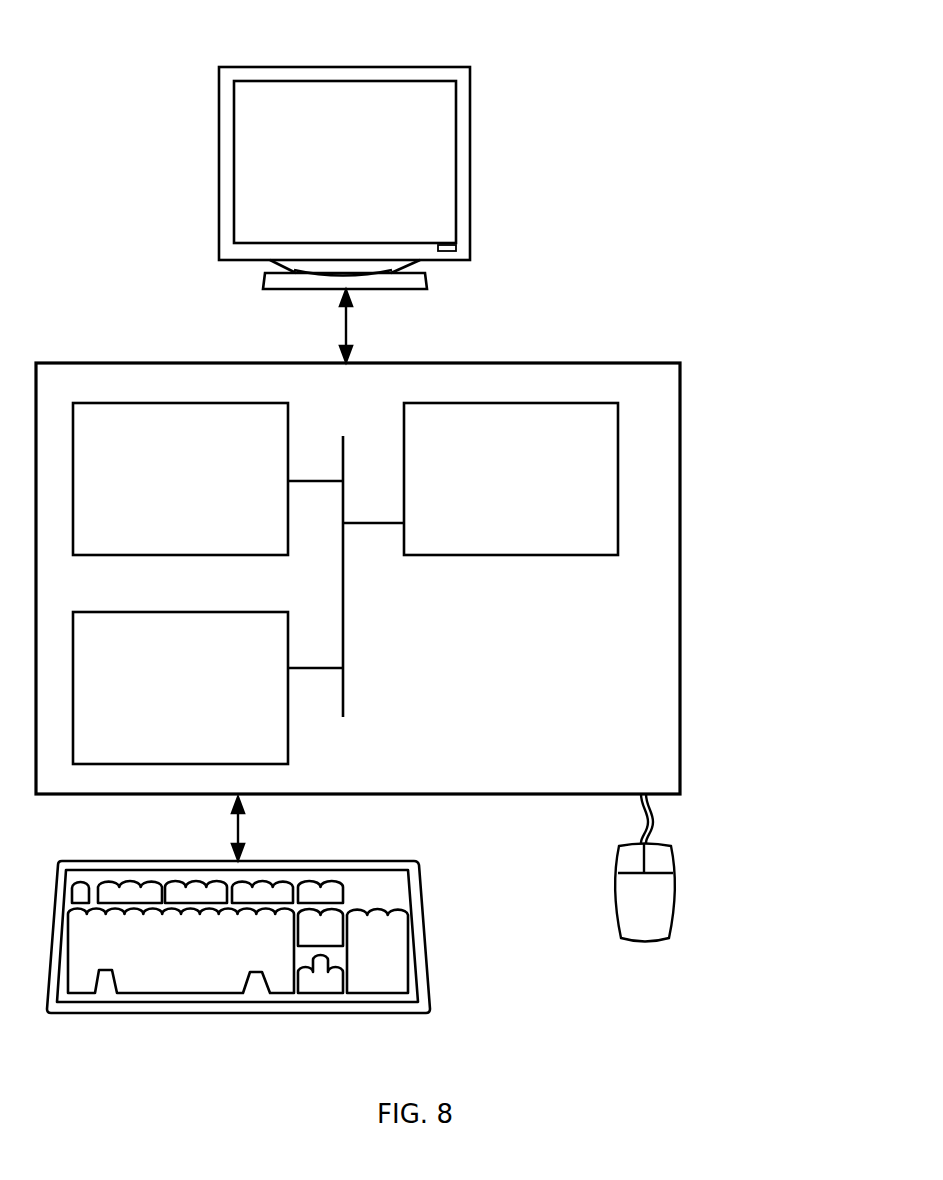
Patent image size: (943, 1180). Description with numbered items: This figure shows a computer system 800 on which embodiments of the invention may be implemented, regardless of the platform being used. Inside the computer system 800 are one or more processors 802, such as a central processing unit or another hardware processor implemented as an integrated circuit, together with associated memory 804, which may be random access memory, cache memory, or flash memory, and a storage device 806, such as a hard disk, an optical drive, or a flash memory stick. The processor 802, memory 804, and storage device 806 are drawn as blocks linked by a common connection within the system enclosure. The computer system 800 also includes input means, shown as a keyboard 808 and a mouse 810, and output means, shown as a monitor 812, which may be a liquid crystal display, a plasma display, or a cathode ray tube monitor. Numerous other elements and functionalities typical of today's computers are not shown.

The computer system 800 is at (735, 370).
The processor 802 is at (491, 478).
The memory 804 is at (160, 480).
The storage device 806 is at (160, 687).
The keyboard 808 is at (158, 949).
The mouse 810 is at (682, 948).
The monitor 812 is at (323, 174).